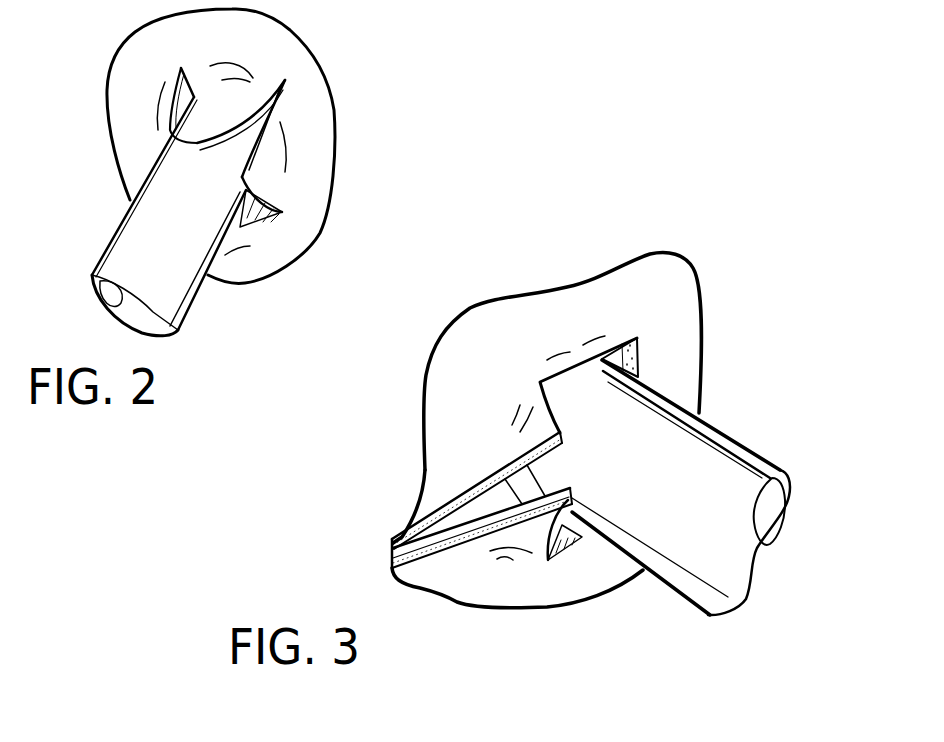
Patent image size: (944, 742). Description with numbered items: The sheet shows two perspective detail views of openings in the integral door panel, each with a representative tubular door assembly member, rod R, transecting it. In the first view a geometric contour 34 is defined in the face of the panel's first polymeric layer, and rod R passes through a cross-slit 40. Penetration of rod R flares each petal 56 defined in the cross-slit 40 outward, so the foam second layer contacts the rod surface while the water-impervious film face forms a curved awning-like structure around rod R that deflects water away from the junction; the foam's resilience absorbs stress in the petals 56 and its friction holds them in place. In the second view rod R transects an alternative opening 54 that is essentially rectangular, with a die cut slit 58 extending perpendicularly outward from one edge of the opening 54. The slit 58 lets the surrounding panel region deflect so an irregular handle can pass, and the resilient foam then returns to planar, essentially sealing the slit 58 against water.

In FIG. 2, the geometric contour 34 is at (322, 116).
In FIG. 2, the cross-slit 40 is at (265, 168).
In FIG. 2, the petal 56 is at (229, 115).
In FIG. 2, the rod R is at (170, 307).
In FIG. 3, the rod R is at (710, 468).
In FIG. 3, the alternative opening 54 is at (638, 353).
In FIG. 3, the die cut slit 58 is at (457, 543).